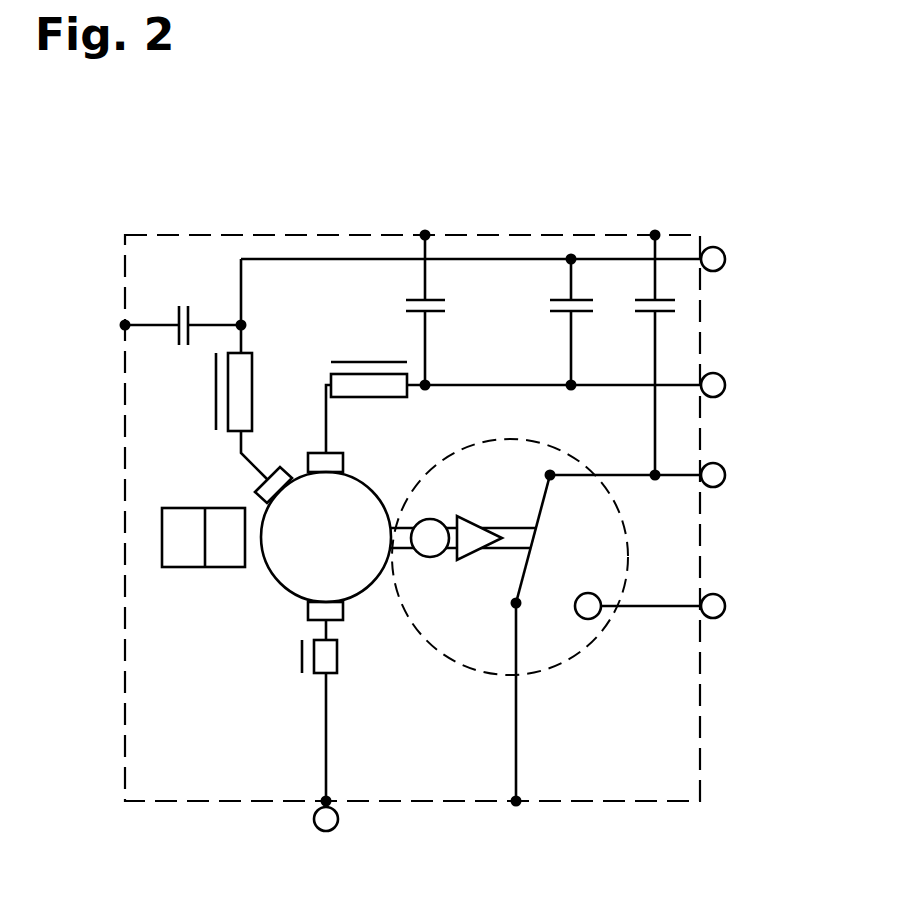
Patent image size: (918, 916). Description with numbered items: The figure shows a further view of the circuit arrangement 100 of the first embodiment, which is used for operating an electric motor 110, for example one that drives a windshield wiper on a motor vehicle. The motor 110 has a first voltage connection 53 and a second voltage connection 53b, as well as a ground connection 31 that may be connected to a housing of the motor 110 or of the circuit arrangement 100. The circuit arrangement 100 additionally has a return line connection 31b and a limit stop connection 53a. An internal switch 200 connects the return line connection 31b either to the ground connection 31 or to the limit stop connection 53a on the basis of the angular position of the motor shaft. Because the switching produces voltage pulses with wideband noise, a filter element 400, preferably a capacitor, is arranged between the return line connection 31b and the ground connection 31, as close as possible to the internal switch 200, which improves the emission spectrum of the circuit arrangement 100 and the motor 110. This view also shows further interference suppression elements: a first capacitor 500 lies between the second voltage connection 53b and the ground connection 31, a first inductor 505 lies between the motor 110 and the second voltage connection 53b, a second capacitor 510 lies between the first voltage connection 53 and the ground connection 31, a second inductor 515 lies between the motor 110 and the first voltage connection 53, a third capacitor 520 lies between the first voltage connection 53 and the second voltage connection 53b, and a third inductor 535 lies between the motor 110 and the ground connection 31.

The circuit arrangement 100 is at (207, 185).
The first capacitor 500 is at (180, 305).
The first inductor 505 is at (238, 387).
The second inductor 515 is at (355, 387).
The second capacitor 510 is at (440, 308).
The third capacitor 520 is at (575, 305).
The filter element 400 is at (657, 305).
The second voltage connection 53b is at (722, 248).
The first voltage connection 53 is at (722, 378).
The return line connection 31b is at (720, 465).
The limit stop connection 53a is at (720, 596).
The internal switch 200 is at (573, 657).
The electric motor 110 is at (303, 587).
The third inductor 535 is at (329, 663).
The ground connection 31 is at (326, 832).